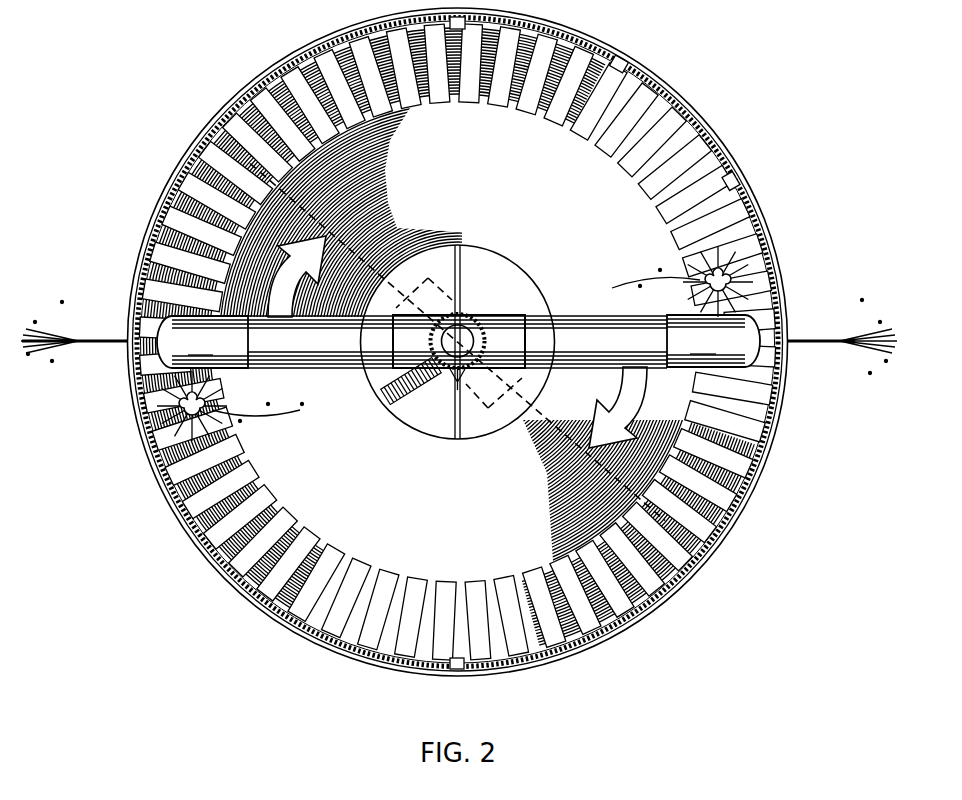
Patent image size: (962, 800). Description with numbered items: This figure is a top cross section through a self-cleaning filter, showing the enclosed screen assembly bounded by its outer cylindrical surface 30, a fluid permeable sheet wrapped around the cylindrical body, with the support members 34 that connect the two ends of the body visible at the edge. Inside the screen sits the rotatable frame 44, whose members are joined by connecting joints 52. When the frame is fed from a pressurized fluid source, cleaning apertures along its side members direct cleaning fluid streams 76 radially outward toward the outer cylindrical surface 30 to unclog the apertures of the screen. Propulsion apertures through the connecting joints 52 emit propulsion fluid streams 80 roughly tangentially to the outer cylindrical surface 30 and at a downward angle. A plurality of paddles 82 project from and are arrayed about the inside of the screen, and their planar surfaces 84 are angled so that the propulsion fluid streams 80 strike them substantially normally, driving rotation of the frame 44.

The outer cylindrical surface 30 is at (272, 66).
The support members 34 is at (622, 60).
The frame 44 is at (598, 304).
The connecting joints 52 is at (458, 352).
The cleaning fluid streams 76 is at (88, 336).
The propulsion fluid streams 80 is at (700, 285).
The paddles 82 is at (572, 136).
The planar surfaces 84 is at (472, 97).